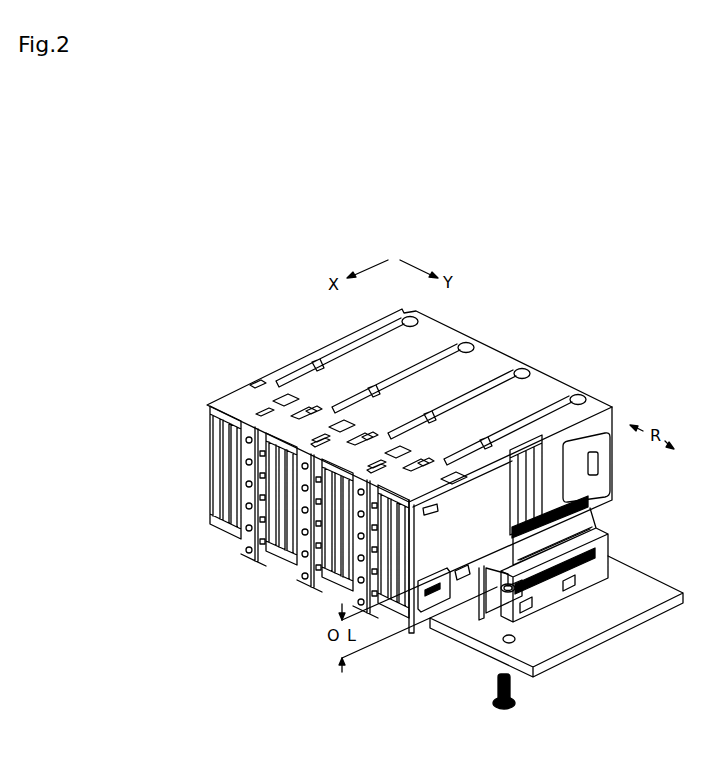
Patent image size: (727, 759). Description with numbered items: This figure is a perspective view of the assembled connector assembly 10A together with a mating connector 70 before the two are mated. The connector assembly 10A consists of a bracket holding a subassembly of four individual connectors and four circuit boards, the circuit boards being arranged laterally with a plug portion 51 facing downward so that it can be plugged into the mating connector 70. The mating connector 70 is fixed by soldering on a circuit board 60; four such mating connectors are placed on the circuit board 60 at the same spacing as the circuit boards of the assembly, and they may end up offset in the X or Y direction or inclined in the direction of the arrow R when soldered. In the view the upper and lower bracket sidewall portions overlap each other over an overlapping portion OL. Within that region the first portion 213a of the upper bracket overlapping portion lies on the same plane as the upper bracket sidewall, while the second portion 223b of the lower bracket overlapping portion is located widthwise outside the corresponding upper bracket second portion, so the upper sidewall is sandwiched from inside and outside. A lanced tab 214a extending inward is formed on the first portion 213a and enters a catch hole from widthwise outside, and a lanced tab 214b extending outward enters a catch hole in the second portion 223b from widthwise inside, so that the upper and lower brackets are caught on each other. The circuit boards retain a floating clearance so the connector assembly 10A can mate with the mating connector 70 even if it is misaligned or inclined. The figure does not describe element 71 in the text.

The connector assembly 10A is at (418, 485).
The plug portion 51 is at (582, 502).
The mating connector 70 is at (578, 564).
The fitting opening of mating connector 71 is at (560, 532).
The circuit board 60 is at (650, 585).
The lanced tab 214a is at (466, 574).
The lanced tab 214b is at (428, 580).
The second portion of lower bracket overlapping portion 223b is at (423, 607).
The first portion of upper bracket overlapping portion 213a is at (470, 607).